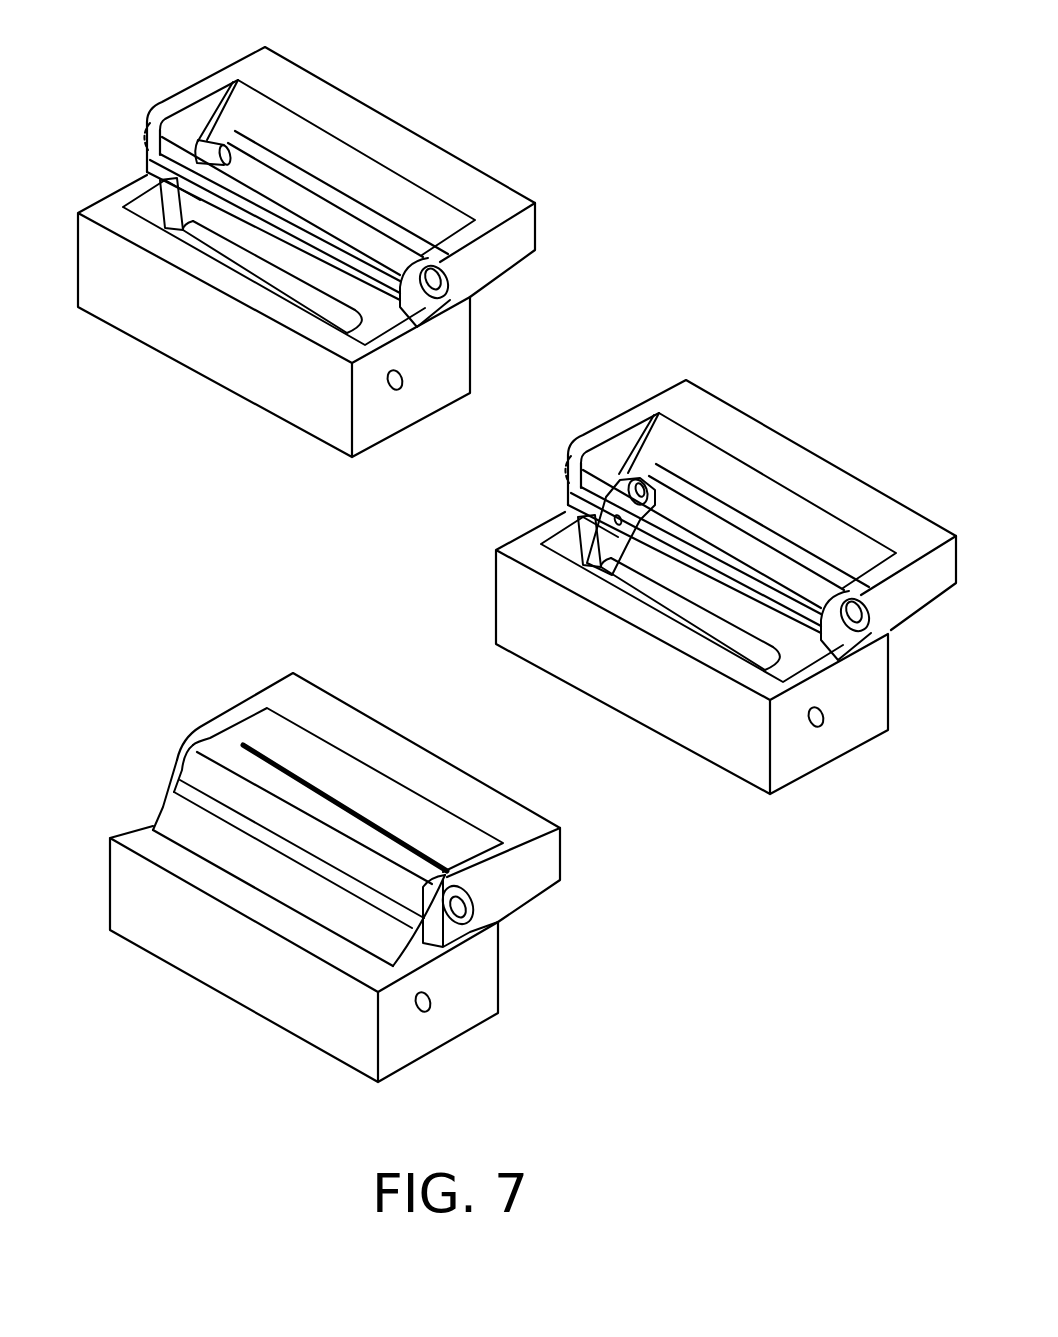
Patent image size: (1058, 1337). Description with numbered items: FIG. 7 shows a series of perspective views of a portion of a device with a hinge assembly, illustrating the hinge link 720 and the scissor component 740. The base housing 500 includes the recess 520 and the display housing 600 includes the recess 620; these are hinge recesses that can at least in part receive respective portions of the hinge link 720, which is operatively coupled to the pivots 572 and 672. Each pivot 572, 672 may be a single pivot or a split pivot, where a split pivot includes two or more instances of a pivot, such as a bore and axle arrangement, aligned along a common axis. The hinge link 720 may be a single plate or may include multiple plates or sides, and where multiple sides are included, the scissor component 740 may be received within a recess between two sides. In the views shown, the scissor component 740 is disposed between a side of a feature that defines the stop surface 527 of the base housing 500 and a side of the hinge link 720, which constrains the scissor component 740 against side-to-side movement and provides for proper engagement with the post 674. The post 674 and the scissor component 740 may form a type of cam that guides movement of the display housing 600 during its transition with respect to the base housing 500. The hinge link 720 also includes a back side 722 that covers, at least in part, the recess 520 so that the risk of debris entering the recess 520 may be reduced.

The base housing 500 is at (140, 180).
The recess 520 is at (150, 204).
The stop surface 527 is at (257, 272).
The pivot 572 is at (388, 393).
The display housing 600 is at (257, 64).
The recess 620 is at (362, 173).
The pivot 672 is at (150, 123).
The post 674 is at (225, 150).
The hinge link 720 is at (182, 747).
The back side 722 is at (177, 810).
The scissor component 740 is at (592, 492).